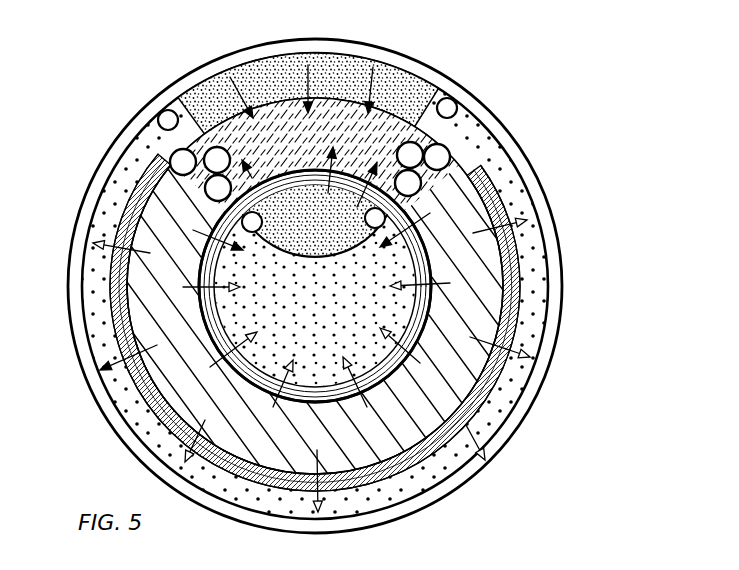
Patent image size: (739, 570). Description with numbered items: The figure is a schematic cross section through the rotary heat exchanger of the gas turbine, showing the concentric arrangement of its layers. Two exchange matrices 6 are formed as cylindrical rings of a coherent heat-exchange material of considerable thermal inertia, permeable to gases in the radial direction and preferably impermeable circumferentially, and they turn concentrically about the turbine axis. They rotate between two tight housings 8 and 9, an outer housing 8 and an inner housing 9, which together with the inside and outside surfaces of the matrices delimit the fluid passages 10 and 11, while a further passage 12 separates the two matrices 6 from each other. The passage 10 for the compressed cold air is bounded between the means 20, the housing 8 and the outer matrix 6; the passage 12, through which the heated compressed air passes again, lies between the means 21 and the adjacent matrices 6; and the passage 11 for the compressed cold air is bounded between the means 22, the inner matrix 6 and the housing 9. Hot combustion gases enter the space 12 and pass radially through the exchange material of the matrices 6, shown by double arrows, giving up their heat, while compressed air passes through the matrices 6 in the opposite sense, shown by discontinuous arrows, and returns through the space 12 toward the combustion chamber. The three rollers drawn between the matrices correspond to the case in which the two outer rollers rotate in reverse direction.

The exchange matrices 6 is at (430, 300).
The outer tight housing 8 is at (405, 63).
The inner tight housing 9 is at (300, 230).
The fluid passage 10 is at (355, 65).
The fluid passage 11 is at (298, 228).
The passage between matrices 12 is at (288, 102).
The delimiting means 20 is at (164, 112).
The delimiting means 21 is at (208, 183).
The delimiting means 22 is at (243, 221).